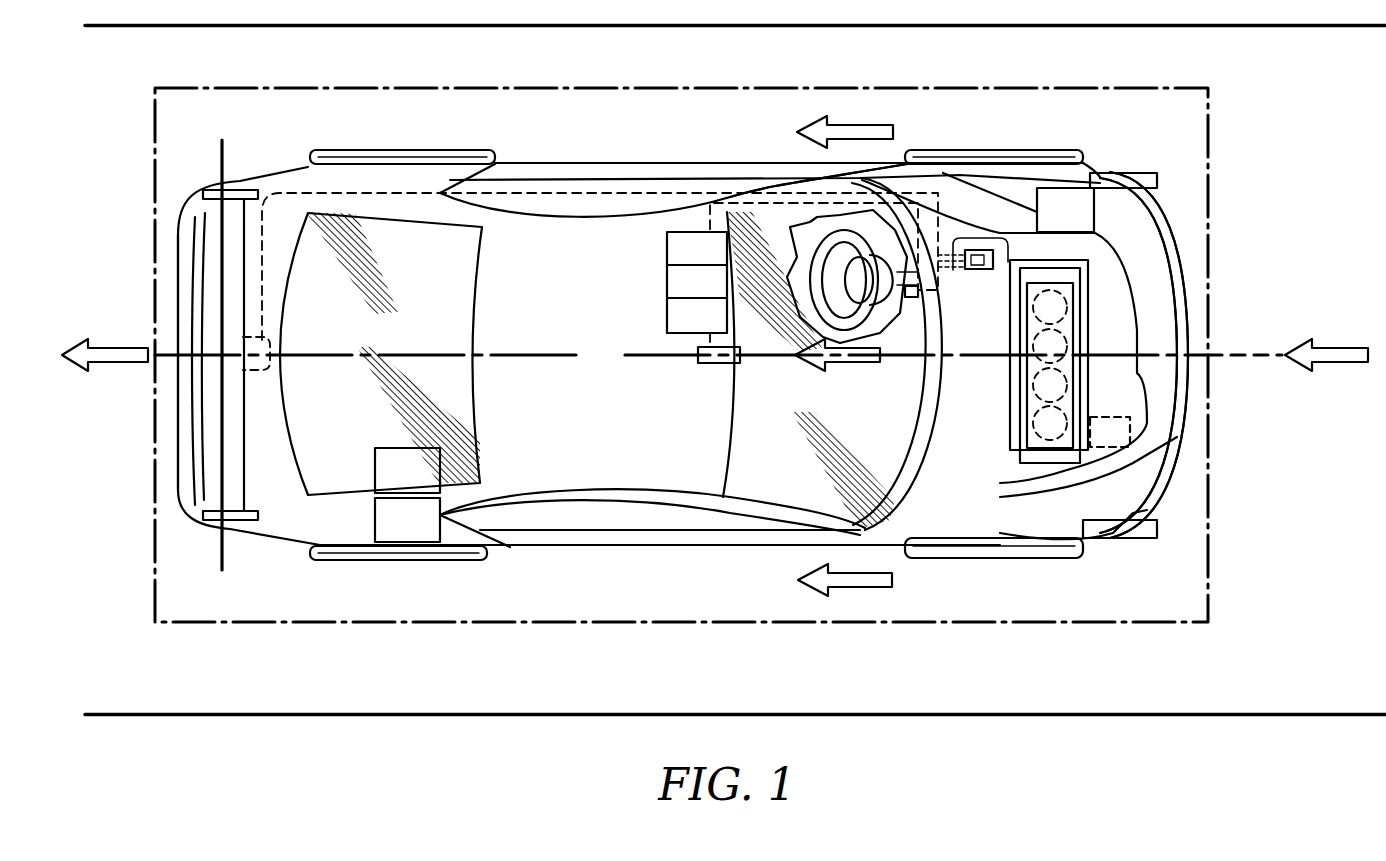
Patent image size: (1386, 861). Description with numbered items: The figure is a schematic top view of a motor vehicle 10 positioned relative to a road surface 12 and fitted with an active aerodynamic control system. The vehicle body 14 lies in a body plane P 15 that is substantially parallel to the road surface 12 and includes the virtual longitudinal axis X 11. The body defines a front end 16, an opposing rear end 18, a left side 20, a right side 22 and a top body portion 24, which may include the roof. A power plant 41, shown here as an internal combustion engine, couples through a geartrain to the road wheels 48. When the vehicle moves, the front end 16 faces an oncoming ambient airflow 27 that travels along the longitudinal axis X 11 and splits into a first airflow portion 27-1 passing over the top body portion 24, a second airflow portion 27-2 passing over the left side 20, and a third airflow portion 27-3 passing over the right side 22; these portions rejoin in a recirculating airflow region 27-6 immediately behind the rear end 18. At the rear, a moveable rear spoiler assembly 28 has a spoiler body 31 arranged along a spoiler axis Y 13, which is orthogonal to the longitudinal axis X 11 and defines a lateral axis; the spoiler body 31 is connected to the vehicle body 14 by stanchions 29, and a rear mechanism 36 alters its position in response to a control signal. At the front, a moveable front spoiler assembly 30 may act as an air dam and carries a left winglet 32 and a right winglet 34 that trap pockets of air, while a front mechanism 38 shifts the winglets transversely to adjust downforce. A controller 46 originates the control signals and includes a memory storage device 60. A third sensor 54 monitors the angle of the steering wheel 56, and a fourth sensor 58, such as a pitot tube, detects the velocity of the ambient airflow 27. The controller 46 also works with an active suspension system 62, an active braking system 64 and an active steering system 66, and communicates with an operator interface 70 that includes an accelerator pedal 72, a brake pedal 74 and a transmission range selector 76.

The motor vehicle 10 is at (1280, 597).
The longitudinal axis X 11 is at (1247, 357).
The road surface 12 is at (681, 390).
The spoiler axis Y 13 is at (224, 170).
The vehicle body 14 is at (612, 248).
The body plane P 15 is at (350, 622).
The front end 16 is at (1200, 278).
The rear end 18 is at (162, 272).
The left side 20 is at (708, 175).
The right side 22 is at (678, 547).
The top body portion 24 is at (718, 356).
The ambient airflow 27 is at (1333, 347).
The first airflow portion 27-1 is at (855, 364).
The second airflow portion 27-2 is at (853, 124).
The third airflow portion 27-3 is at (850, 589).
The recirculating airflow region 27-6 is at (115, 364).
The rear spoiler assembly 28 is at (258, 463).
The stanchions 29 is at (210, 517).
The front spoiler assembly 30 is at (1176, 500).
The spoiler body 31 is at (213, 468).
The left winglet 32 is at (1158, 181).
The right winglet 34 is at (1160, 528).
The rear mechanism 36 is at (243, 372).
The front mechanism 38 is at (1133, 430).
The power plant 41 is at (1115, 286).
The controller 46 is at (968, 250).
The road wheels 48 is at (363, 150).
The third sensor 54 is at (908, 299).
The steering wheel 56 is at (800, 258).
The fourth sensor 58 is at (720, 367).
The memory storage device 60 is at (1004, 258).
The active suspension system 62 is at (1065, 210).
The active braking system 64 is at (407, 470).
The active steering system 66 is at (407, 520).
The operator interface 70 is at (648, 282).
The accelerator pedal 72 is at (697, 249).
The brake pedal 74 is at (697, 282).
The transmission range selector 76 is at (697, 317).